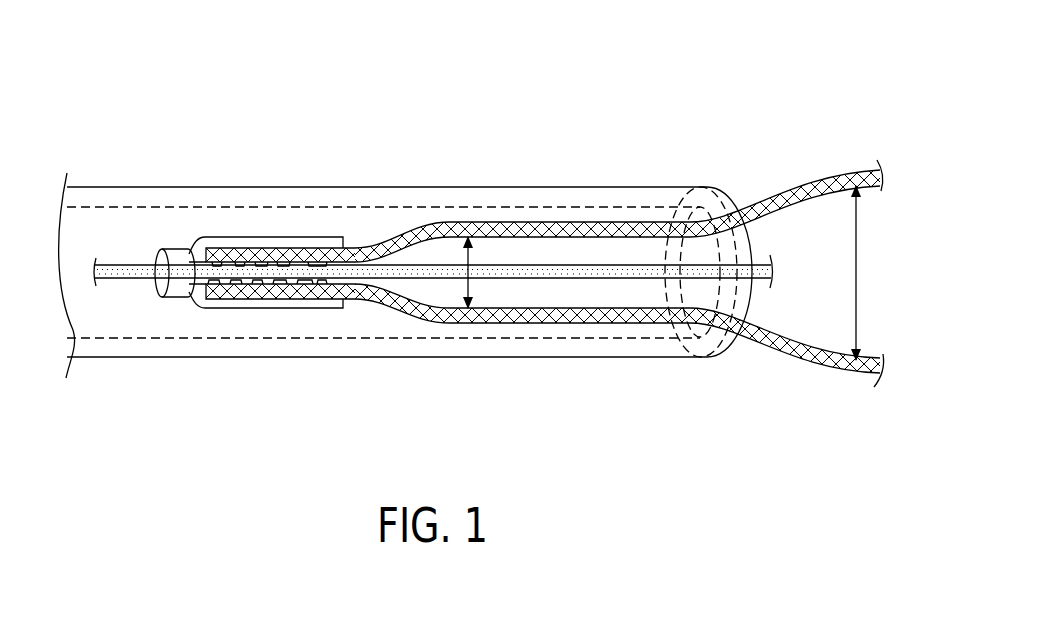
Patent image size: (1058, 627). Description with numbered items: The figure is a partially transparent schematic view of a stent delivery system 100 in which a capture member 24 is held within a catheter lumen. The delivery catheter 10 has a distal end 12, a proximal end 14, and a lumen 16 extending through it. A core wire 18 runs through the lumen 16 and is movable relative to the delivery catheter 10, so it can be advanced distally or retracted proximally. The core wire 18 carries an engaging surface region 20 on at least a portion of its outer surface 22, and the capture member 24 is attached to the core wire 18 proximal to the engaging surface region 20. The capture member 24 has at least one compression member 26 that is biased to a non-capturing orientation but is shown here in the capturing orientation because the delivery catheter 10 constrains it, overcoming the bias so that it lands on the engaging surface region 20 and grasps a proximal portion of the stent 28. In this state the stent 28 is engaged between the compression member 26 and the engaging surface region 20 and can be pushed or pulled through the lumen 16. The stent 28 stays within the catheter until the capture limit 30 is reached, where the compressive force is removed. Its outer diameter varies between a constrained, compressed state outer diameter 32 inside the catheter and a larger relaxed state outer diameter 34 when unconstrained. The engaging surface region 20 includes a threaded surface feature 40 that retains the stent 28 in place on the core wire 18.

The stent delivery system 100 is at (275, 80).
The delivery catheter 10 is at (537, 187).
The distal end 12 is at (718, 162).
The proximal end 14 is at (152, 165).
The lumen 16 is at (243, 207).
The core wire 18 is at (530, 265).
The engaging surface region 20 is at (239, 280).
The outer surface 22 is at (602, 323).
The capture member 24 is at (150, 256).
The compression member 26 is at (345, 248).
The stent 28 is at (867, 170).
The capture limit 30 is at (718, 366).
The compressed state outer diameter 32 is at (470, 287).
The relaxed state outer diameter 34 is at (857, 283).
The surface feature 40 is at (297, 262).